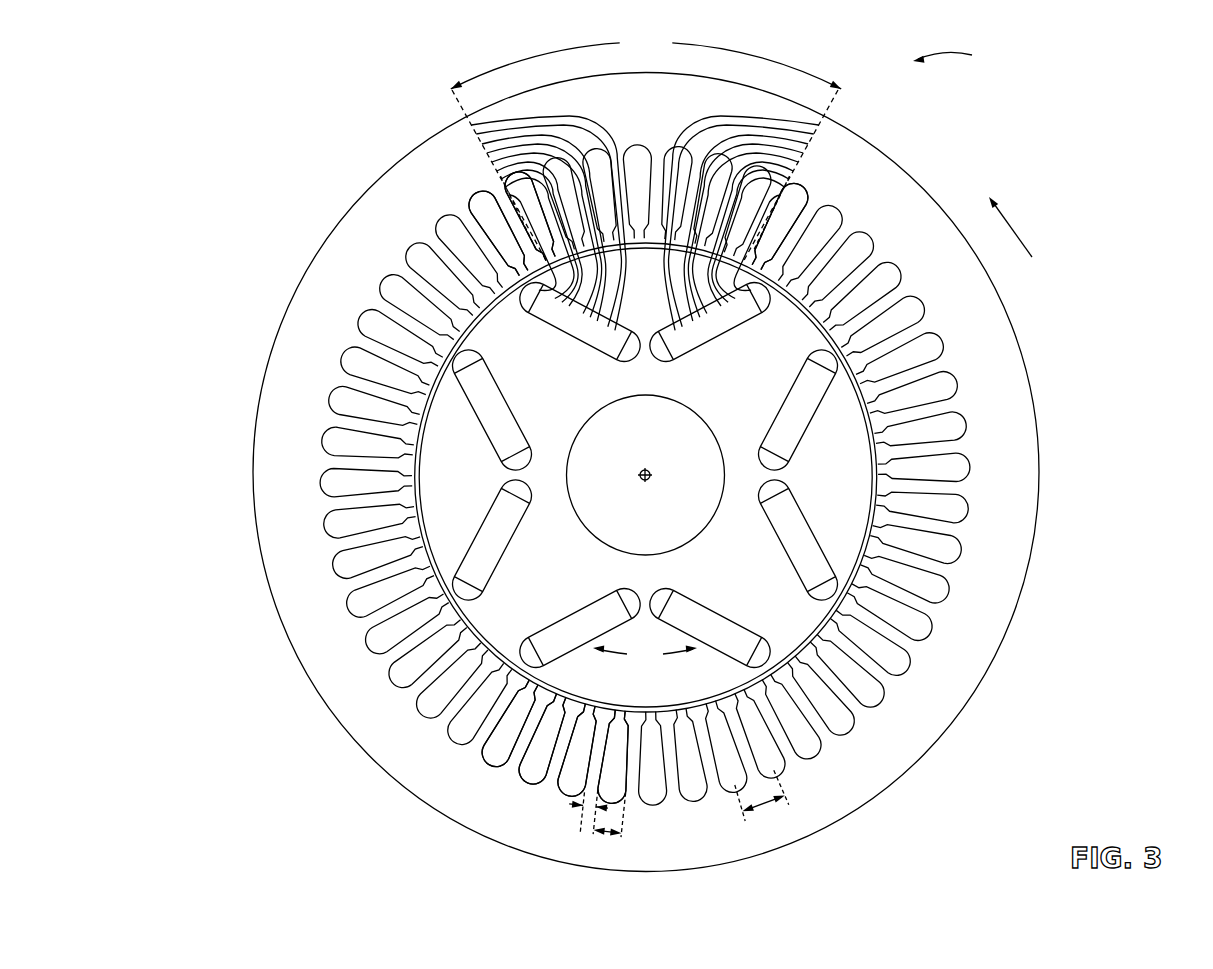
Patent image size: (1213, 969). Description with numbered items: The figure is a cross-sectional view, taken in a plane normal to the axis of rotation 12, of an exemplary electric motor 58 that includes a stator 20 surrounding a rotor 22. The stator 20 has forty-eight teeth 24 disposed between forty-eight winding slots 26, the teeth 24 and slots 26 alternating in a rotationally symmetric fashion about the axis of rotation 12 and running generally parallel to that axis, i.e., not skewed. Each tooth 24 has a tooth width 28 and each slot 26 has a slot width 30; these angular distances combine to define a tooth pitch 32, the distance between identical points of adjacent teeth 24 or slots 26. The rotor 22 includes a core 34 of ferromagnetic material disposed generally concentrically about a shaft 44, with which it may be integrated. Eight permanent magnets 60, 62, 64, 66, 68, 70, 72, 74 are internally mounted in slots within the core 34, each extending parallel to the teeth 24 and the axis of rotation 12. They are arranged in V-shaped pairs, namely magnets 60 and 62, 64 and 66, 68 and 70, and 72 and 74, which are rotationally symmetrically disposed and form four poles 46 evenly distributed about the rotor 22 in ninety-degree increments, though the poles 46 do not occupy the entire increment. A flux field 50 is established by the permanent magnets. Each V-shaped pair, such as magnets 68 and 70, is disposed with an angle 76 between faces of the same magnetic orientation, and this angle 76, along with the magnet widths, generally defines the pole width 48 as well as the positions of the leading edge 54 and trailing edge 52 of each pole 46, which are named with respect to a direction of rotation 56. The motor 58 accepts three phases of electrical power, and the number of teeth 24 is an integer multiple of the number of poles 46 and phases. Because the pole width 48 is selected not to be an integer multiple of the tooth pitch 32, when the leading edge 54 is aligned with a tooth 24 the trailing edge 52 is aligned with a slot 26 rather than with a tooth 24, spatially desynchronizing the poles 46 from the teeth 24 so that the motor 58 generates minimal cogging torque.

The axis of rotation 12 is at (651, 469).
The stator 20 is at (1005, 660).
The rotor 22 is at (822, 647).
The teeth 24 is at (500, 214).
The winding slots 26 is at (808, 209).
The tooth width 28 is at (572, 804).
The slot width 30 is at (608, 832).
The tooth pitch 32 is at (766, 805).
The core 34 is at (718, 576).
The shaft 44 is at (697, 408).
The poles 46 is at (628, 114).
The pole width 48 is at (646, 62).
The flux field 50 is at (470, 128).
The trailing edge 52 is at (852, 113).
The leading edge 54 is at (447, 108).
The direction of rotation 56 is at (1014, 228).
The electric motor 58 is at (958, 58).
The permanent magnet 60 is at (574, 335).
The permanent magnet 62 is at (723, 332).
The permanent magnet 64 is at (814, 418).
The permanent magnet 66 is at (808, 518).
The permanent magnet 68 is at (717, 612).
The permanent magnet 70 is at (578, 612).
The permanent magnet 72 is at (486, 522).
The permanent magnet 74 is at (482, 421).
The angle 76 is at (645, 657).